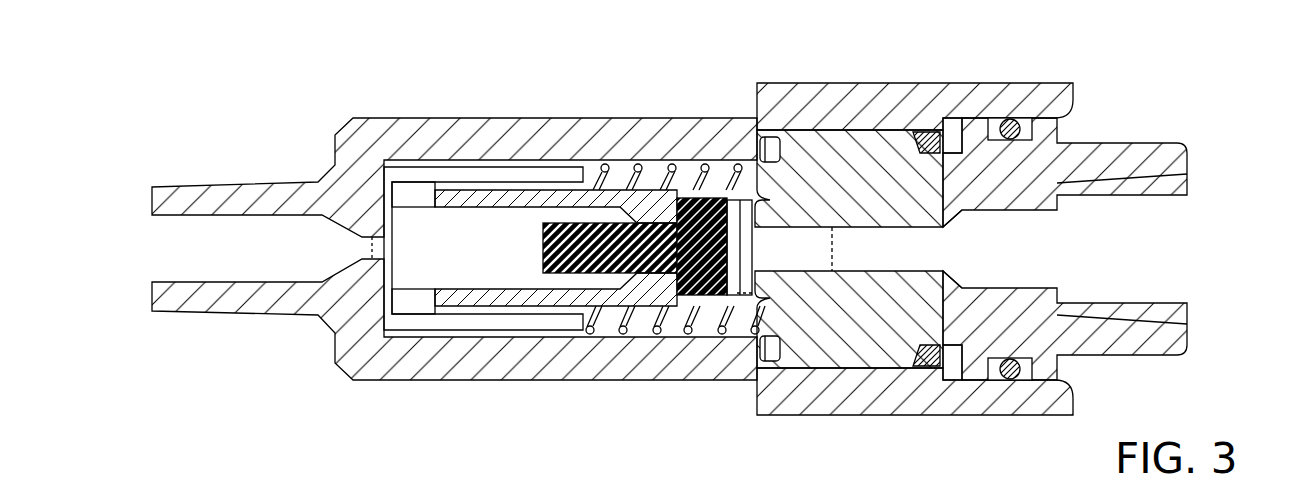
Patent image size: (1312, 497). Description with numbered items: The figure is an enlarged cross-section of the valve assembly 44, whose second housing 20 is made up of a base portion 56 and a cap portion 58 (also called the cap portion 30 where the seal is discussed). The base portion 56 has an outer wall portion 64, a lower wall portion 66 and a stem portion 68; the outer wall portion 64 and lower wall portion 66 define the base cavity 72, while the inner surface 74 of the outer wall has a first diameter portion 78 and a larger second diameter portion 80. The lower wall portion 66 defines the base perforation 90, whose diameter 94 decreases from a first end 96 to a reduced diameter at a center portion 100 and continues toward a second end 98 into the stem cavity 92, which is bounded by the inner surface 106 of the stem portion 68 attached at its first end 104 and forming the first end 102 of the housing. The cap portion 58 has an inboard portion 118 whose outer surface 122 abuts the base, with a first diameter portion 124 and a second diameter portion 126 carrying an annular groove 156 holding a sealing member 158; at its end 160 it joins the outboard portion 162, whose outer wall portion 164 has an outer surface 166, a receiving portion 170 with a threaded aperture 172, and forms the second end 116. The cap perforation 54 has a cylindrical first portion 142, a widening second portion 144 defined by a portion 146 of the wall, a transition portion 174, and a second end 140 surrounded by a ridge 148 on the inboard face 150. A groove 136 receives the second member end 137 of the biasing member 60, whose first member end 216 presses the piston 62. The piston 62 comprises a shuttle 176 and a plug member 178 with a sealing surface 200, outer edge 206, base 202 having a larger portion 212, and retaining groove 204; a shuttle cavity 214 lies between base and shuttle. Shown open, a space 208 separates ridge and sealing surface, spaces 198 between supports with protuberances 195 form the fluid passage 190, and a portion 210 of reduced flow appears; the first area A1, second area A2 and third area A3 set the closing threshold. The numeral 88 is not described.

The second housing 20 is at (510, 118).
The cap portion 30 is at (1140, 160).
The valve assembly 44 is at (600, 360).
The cap perforation 54 is at (874, 256).
The base portion 56 is at (580, 125).
The cap portion 58 is at (925, 142).
The biasing member 60 is at (690, 300).
The piston 62 is at (565, 167).
The outer wall portion 64 is at (820, 105).
The lower wall portion 66 is at (315, 328).
The stem portion 68 is at (180, 302).
The base cavity 72 is at (404, 256).
The inner surface 74 is at (565, 322).
The first diameter portion 78 is at (925, 355).
The second diameter portion 80 is at (1010, 378).
The piston flange 88 is at (455, 315).
The base perforation 90 is at (371, 248).
The stem cavity 92 is at (196, 257).
The diameter of the base perforation 94 is at (378, 242).
The first end of the base perforation 96 is at (393, 172).
The second end of the base perforation 98 is at (360, 238).
The center portion 100 is at (292, 313).
The first end of the second housing 102 is at (152, 200).
The first end of the stem portion 104 is at (305, 300).
The inner surface of the stem portion 106 is at (172, 216).
The second end of the second housing 116 is at (1190, 342).
The inboard portion 118 is at (935, 175).
The outer surface 122 is at (985, 380).
The first diameter portion 124 is at (768, 290).
The second diameter portion 126 is at (1062, 395).
The groove 136 is at (775, 185).
The second member end 137 is at (742, 300).
The second end of the cap perforation 140 is at (775, 340).
The first portion of the cap perforation 142 is at (952, 135).
The second portion of the cap perforation 144 is at (858, 205).
The portion of the wall portion 146 is at (840, 165).
The ridge 148 is at (772, 148).
The inboard face 150 is at (722, 300).
The annular groove 156 is at (1030, 150).
The sealing member 158 is at (1010, 120).
The end of the inboard portion 160 is at (1062, 370).
The outboard portion 162 is at (1160, 350).
The outer wall portion 164 is at (1145, 185).
The outer surface 166 is at (1090, 165).
The receiving portion 170 is at (1145, 318).
The aperture 172 is at (1170, 208).
The transition portion 174 is at (958, 372).
The shuttle 176 is at (470, 300).
The plug member 178 is at (500, 300).
The fluid passage 190 is at (640, 300).
The protuberance 195 is at (387, 205).
The spaces 198 is at (330, 320).
The sealing surface 200 is at (705, 205).
The base 202 is at (545, 238).
The retaining groove 204 is at (628, 333).
The outer edge 206 is at (660, 333).
The space 208 is at (700, 335).
The portion 210 is at (700, 195).
The portion of the base 212 is at (590, 310).
The shuttle cavity 214 is at (455, 330).
The first member end 216 is at (537, 300).
The first area A1 is at (365, 248).
The second area A2 is at (748, 230).
The third area A3 is at (880, 215).